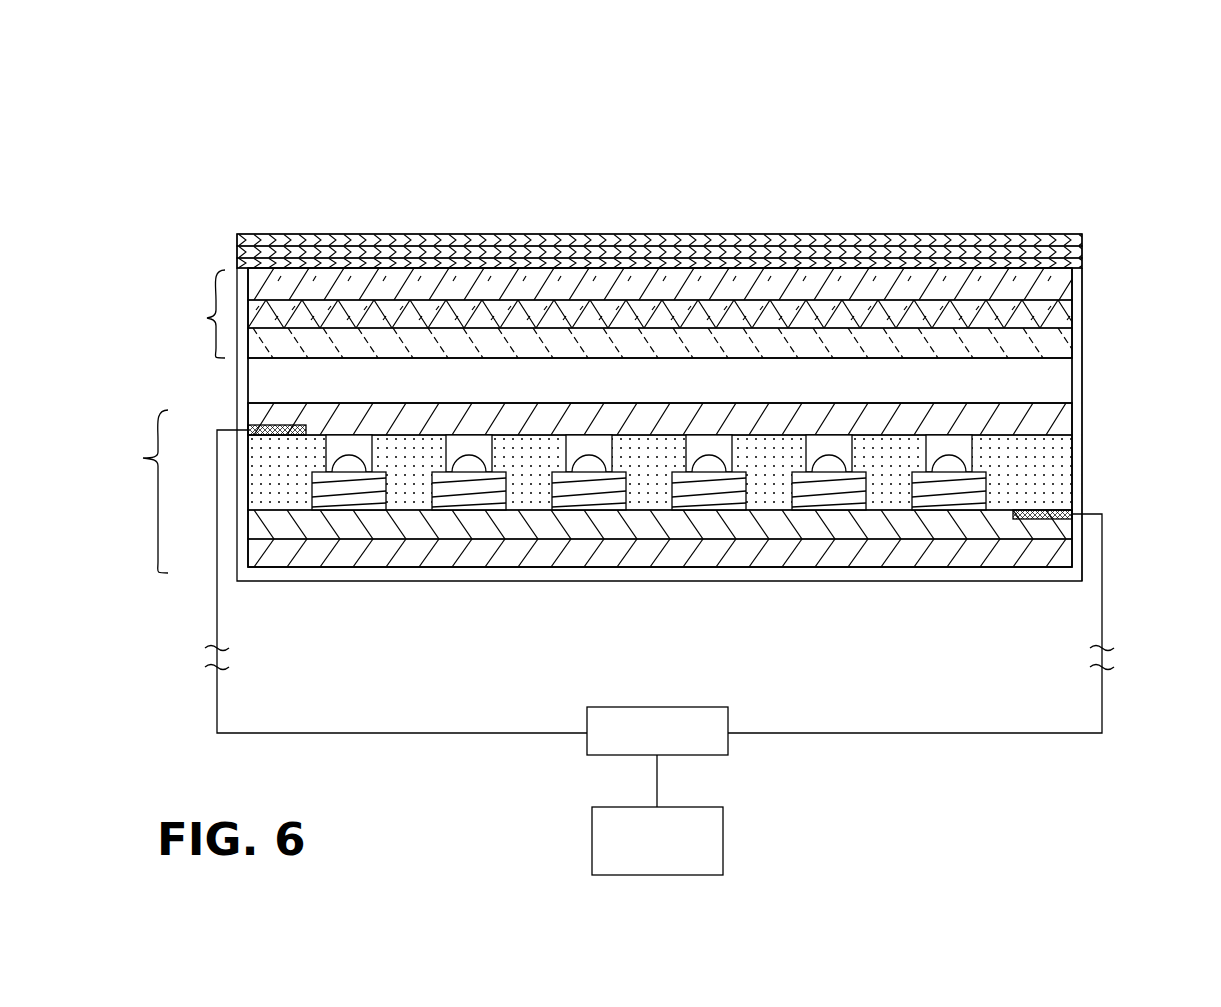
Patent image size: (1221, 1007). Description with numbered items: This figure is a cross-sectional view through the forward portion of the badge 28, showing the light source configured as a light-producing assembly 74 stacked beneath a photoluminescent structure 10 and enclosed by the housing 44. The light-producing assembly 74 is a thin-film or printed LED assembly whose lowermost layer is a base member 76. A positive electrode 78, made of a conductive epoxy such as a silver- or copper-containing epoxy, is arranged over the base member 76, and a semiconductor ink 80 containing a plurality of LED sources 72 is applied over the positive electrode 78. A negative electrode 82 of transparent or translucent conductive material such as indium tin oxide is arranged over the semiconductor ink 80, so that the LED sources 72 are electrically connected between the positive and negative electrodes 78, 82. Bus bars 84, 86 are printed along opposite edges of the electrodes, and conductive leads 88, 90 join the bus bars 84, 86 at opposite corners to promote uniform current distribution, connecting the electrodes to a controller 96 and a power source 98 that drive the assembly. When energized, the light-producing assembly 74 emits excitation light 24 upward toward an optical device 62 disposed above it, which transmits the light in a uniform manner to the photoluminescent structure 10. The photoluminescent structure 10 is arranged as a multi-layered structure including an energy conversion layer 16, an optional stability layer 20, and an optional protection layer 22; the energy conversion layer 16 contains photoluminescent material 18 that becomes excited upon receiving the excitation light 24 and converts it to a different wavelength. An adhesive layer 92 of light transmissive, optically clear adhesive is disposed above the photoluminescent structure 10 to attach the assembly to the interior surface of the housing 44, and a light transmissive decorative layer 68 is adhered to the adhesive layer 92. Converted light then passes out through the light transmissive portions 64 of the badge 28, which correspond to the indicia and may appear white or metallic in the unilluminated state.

The badge 28 is at (262, 93).
The housing 44 is at (255, 240).
The light transmissive portions 64 is at (615, 221).
The decorative layer 68 is at (253, 257).
The adhesive layer 92 is at (253, 266).
The photoluminescent structure 10 is at (688, 303).
The photoluminescent material 18 is at (727, 303).
The protection layer 22 is at (1063, 287).
The stability layer 20 is at (1065, 315).
The energy conversion layer 16 is at (1068, 348).
The optical device 62 is at (1063, 385).
The light-producing assembly 74 is at (643, 525).
The excitation light 24 is at (666, 525).
The negative electrode 82 is at (1065, 410).
The semiconductor ink 80 is at (1065, 470).
The LED sources 72 is at (447, 493).
The positive electrode 78 is at (1072, 530).
The base member 76 is at (1072, 560).
The bus bar 84 is at (248, 430).
The bus bar 86 is at (1065, 512).
The conductive lead 88 is at (216, 614).
The conductive lead 90 is at (1082, 247).
The controller 96 is at (728, 750).
The power source 98 is at (723, 823).